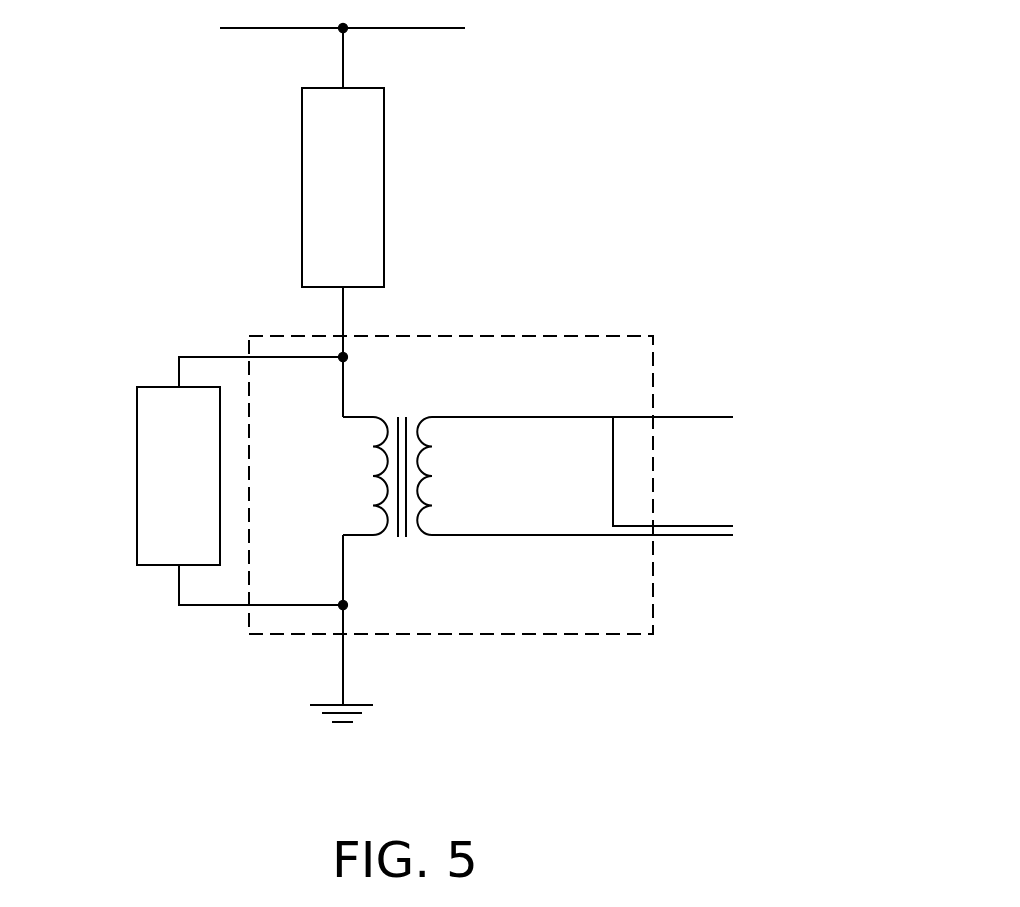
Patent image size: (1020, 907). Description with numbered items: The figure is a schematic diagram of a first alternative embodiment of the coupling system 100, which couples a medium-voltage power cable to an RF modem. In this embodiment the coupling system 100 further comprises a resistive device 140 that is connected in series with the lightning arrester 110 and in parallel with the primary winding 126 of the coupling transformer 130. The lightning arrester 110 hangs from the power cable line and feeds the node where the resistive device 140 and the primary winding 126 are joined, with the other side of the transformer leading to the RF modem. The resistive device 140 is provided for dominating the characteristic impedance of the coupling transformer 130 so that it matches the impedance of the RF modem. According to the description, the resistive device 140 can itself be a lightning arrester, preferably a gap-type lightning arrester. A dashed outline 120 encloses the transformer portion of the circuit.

The coupling system 100 is at (192, 262).
The lightning arrester 110 is at (363, 168).
The coupling circuit 120 is at (625, 356).
The primary winding 126 is at (343, 395).
The coupling transformer 130 is at (402, 545).
The resistive device 140 is at (169, 487).